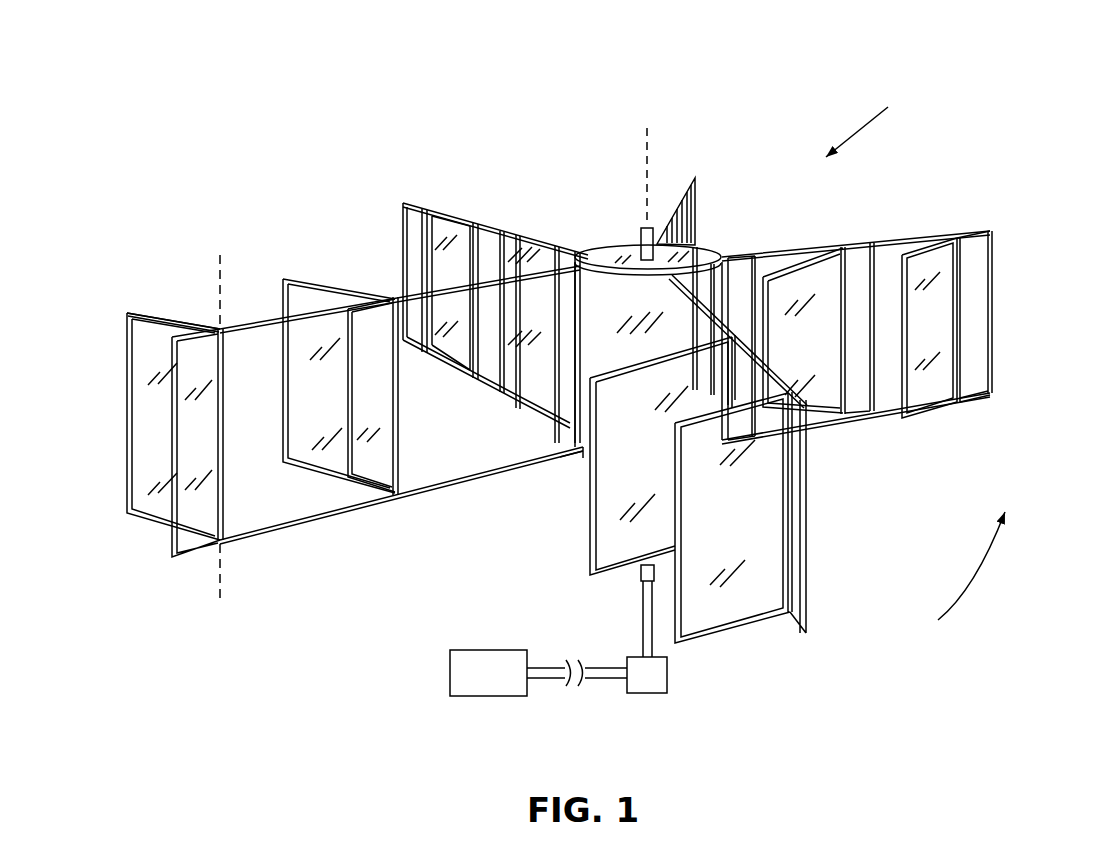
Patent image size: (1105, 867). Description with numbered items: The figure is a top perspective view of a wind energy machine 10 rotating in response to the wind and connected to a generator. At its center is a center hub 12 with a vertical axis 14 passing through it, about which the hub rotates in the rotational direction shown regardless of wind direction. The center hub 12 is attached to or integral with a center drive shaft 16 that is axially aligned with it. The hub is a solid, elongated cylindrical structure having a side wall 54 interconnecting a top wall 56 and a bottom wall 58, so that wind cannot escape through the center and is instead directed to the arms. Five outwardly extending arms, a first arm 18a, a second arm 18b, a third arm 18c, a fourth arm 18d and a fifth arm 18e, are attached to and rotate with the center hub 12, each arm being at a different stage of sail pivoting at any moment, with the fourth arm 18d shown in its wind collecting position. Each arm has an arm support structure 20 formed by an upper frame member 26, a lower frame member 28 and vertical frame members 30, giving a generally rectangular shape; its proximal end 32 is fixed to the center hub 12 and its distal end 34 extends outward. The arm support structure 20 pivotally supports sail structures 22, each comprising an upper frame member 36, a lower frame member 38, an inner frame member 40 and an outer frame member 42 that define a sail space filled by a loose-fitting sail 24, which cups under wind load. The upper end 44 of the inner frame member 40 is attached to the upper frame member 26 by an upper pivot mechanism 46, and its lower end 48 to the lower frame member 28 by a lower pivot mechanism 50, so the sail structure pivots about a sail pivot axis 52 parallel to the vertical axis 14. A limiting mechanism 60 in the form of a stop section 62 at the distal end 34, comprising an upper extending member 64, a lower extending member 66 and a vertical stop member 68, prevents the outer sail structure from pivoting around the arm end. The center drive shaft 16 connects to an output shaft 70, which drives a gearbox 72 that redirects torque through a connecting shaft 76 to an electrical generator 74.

The wind energy machine 10 is at (809, 86).
The center hub 12 is at (629, 287).
The vertical axis 14 is at (647, 150).
The center drive shaft 16 is at (646, 243).
The first arm 18a is at (679, 500).
The second arm 18b is at (909, 298).
The third arm 18c is at (701, 175).
The fourth arm 18d is at (456, 301).
The fifth arm 18e is at (318, 428).
The arm support structure 20 is at (493, 222).
The sail structure 22 is at (136, 403).
The sail 24 is at (145, 421).
The upper frame member 26 is at (897, 240).
The lower frame member 28 is at (884, 413).
The vertical frame member 30 is at (871, 268).
The proximal end 32 is at (729, 250).
The distal end 34 is at (816, 630).
The upper frame member 36 is at (163, 322).
The lower frame member 38 is at (330, 478).
The inner frame member 40 is at (402, 403).
The outer frame member 42 is at (145, 393).
The upper end 44 is at (393, 297).
The upper pivot mechanism 46 is at (232, 331).
The lower end 48 is at (393, 496).
The lower pivot mechanism 50 is at (223, 540).
The sail pivot axis 52 is at (222, 290).
The side wall 54 is at (606, 346).
The top wall 56 is at (598, 253).
The bottom wall 58 is at (582, 456).
The limiting mechanism 60 is at (979, 226).
The stop section 62 is at (989, 300).
The upper extending member 64 is at (986, 232).
The lower extending member 66 is at (975, 405).
The stop member 68 is at (1011, 296).
The output shaft 70 is at (642, 630).
The gearbox 72 is at (655, 672).
The electrical generator 74 is at (460, 672).
The connecting shaft 76 is at (553, 680).